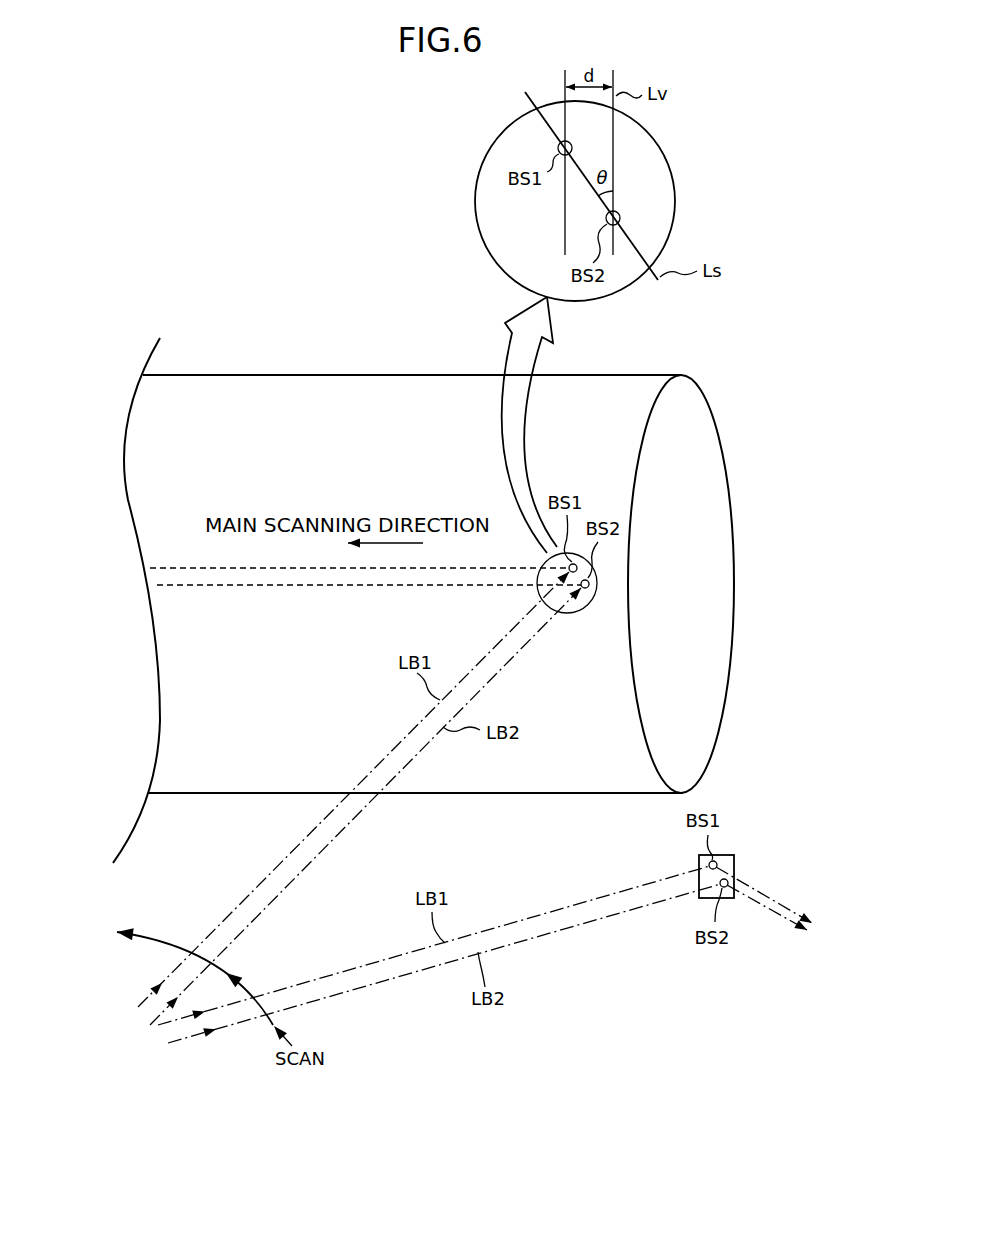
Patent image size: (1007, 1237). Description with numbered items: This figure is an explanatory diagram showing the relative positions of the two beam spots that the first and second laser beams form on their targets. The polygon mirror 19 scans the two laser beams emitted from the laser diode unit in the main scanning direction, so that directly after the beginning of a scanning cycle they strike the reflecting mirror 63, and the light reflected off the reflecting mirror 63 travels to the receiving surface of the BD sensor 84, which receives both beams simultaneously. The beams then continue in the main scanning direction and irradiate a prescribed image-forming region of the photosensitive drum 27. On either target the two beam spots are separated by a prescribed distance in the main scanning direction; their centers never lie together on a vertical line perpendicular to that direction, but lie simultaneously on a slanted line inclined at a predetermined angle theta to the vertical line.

The photosensitive drum 27 is at (632, 372).
The reflecting mirror 63 is at (726, 855).
The polygon mirror 19 is at (383, 980).
The BD sensor 84 is at (791, 925).